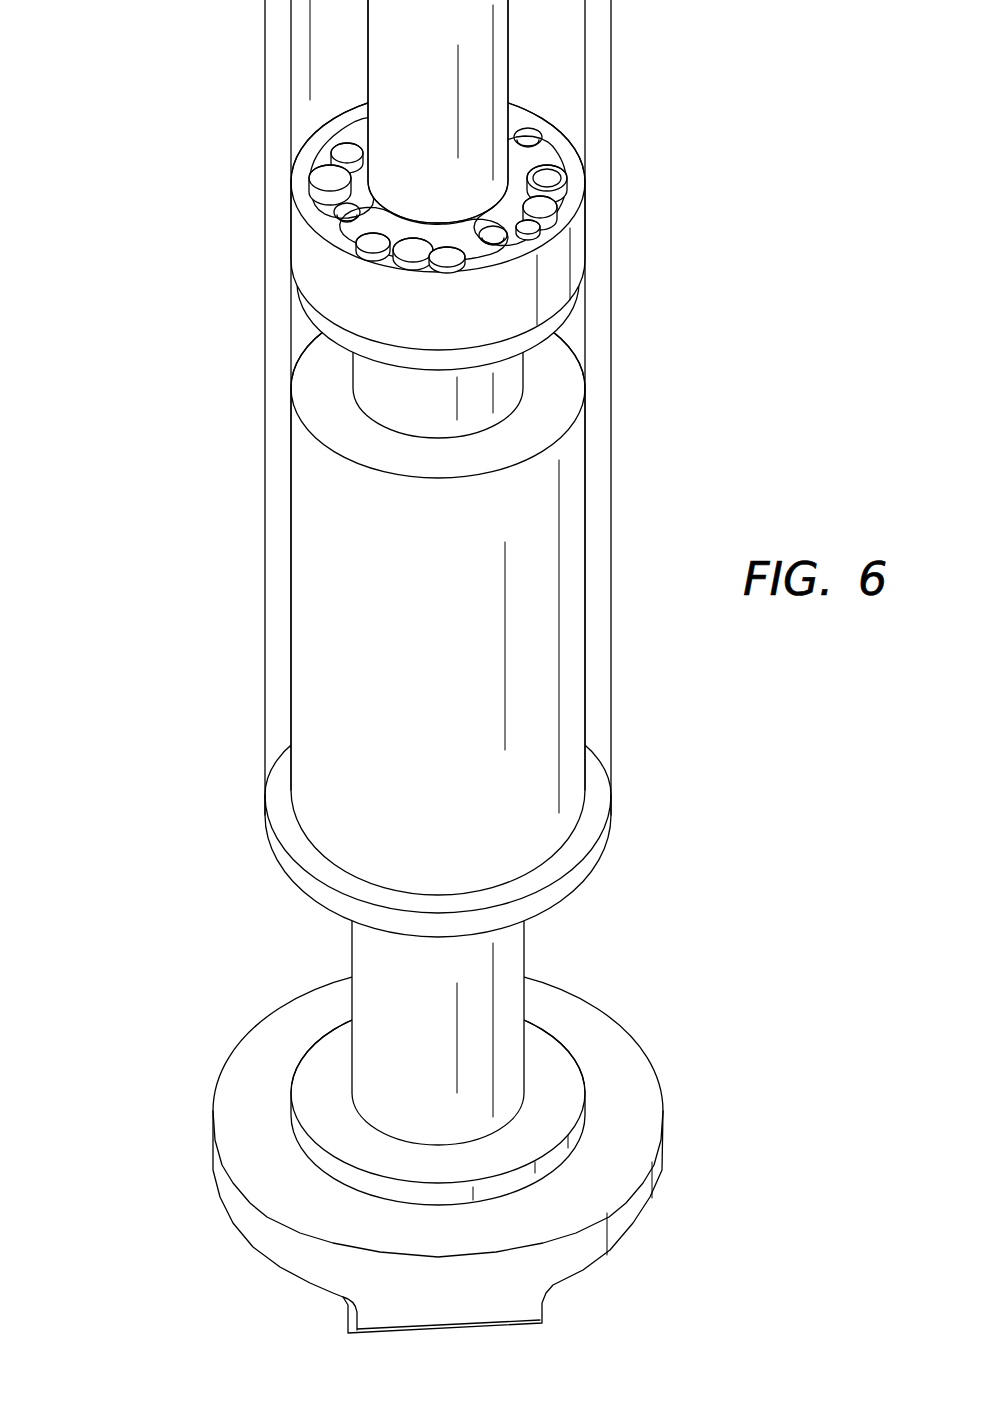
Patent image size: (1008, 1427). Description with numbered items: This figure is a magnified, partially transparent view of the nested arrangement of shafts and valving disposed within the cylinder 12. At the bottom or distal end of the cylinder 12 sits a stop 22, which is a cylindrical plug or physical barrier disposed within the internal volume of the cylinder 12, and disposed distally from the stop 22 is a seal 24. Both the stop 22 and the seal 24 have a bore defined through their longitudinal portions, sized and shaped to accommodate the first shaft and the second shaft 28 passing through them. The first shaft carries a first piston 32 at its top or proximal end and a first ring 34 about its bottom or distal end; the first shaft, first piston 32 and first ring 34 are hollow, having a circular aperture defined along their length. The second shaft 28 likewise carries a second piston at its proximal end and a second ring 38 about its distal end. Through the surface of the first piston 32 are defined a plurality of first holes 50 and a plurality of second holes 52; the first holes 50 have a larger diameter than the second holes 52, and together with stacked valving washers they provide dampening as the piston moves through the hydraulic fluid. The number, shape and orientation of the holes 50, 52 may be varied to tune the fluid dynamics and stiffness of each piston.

The cylinder 12 is at (268, 203).
The stop 22 is at (377, 578).
The seal 24 is at (300, 852).
The second shaft 28 is at (448, 58).
The first piston 32 is at (537, 277).
The first ring 34 is at (557, 1055).
The second ring 38 is at (633, 1113).
The first holes 50 is at (328, 172).
The second holes 52 is at (538, 135).